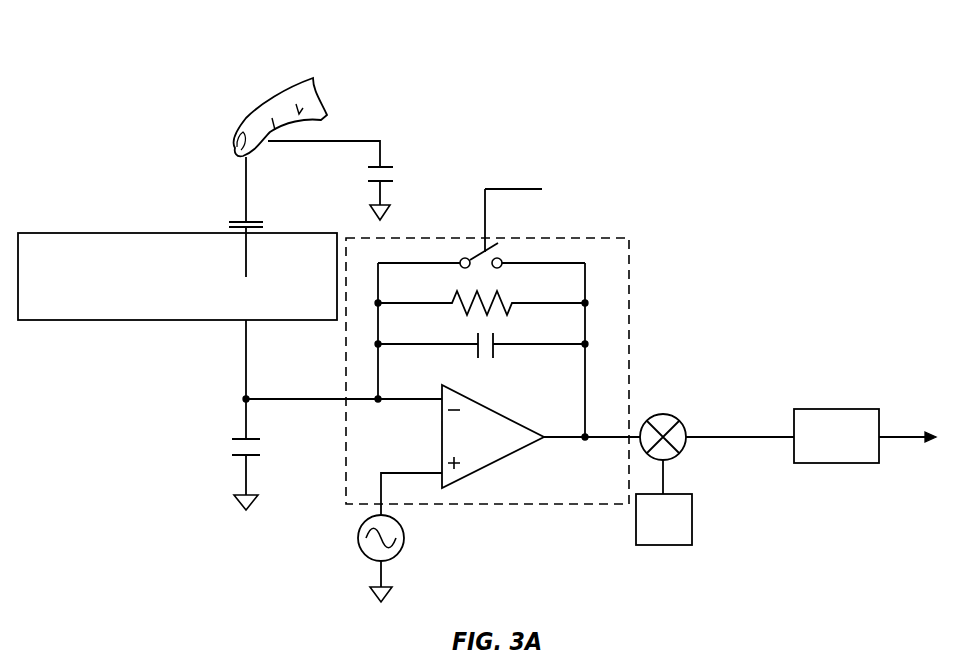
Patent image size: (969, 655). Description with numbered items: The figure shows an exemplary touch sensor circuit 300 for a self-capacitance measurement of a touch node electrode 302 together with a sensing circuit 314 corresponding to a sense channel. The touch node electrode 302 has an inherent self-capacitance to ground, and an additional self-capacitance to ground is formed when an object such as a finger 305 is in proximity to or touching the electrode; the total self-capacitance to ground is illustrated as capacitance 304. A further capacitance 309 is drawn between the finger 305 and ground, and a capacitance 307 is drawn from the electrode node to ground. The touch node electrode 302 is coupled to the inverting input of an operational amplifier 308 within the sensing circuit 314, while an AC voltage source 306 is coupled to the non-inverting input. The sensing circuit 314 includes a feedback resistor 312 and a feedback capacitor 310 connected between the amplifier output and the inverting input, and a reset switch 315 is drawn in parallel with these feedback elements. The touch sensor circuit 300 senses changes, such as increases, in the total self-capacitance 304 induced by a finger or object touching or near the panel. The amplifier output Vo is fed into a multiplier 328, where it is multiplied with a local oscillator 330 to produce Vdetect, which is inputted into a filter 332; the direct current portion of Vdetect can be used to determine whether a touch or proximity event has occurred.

The touch sensor circuit 300 is at (191, 68).
The touch node electrode 302 is at (131, 247).
The capacitance 304 is at (257, 220).
The finger 305 is at (275, 97).
The AC voltage source 306 is at (404, 535).
The parasitic capacitance 307 is at (232, 447).
The operational amplifier 308 is at (488, 466).
The finger-to-ground capacitance 309 is at (393, 175).
The feedback capacitor 310 is at (498, 338).
The feedback resistor 312 is at (512, 292).
The sensing circuit 314 is at (578, 238).
The reset switch 315 is at (473, 256).
The multiplier 328 is at (663, 413).
The local oscillator 330 is at (665, 546).
The filter 332 is at (835, 409).